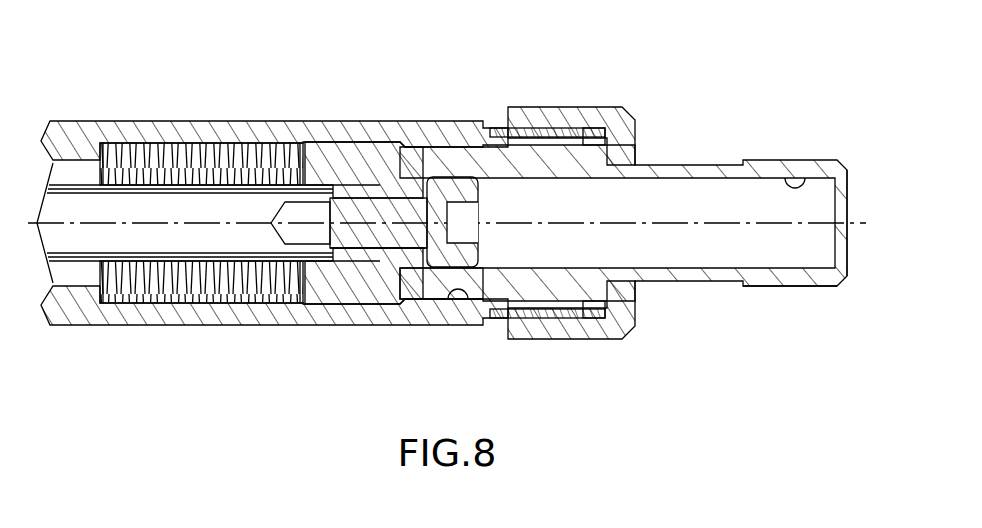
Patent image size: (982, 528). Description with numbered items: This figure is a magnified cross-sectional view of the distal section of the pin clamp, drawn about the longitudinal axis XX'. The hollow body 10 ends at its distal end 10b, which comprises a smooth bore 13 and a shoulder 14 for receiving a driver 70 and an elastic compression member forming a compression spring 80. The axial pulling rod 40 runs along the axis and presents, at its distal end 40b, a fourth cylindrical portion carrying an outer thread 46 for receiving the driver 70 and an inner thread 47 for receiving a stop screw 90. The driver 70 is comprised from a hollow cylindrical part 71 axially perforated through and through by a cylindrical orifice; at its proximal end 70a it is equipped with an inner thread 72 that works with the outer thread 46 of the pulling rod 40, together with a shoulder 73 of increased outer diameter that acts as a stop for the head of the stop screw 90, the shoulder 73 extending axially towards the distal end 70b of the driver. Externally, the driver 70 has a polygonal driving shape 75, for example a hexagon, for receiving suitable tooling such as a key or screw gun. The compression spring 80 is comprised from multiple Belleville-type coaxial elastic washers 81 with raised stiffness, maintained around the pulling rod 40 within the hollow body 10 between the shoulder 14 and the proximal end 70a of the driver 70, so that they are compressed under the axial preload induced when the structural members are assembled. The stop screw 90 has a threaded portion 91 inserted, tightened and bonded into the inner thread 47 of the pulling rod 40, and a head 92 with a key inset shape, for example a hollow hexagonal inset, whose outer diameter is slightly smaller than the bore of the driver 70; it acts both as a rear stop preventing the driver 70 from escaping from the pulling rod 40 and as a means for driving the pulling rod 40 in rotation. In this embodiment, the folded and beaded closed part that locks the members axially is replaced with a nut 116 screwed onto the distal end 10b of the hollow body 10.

The hollow body 10 is at (180, 118).
The distal end of the hollow body 10b is at (590, 132).
The smooth bore 13 is at (457, 292).
The shoulder 14 is at (88, 297).
The axial pulling rod 40 is at (188, 235).
The distal end of the pulling rod 40b is at (425, 180).
The outer thread 46 is at (380, 190).
The inner thread 47 is at (370, 260).
The driver 70 is at (708, 280).
The proximal end of the driver 70a is at (310, 283).
The distal end of the driver 70b is at (830, 282).
The hollow cylindrical part 71 is at (808, 184).
The inner thread 72 is at (333, 185).
The shoulder 73 is at (423, 260).
The polygonal driving shape 75 is at (795, 287).
The compression spring 80 is at (150, 306).
The Belleville-type coaxial elastic washers 81 is at (123, 143).
The stop screw 90 is at (355, 210).
The threaded portion 91 is at (348, 257).
The head 92 is at (485, 135).
The nut 116 is at (583, 327).
The longitudinal axis XX' is at (447, 156).